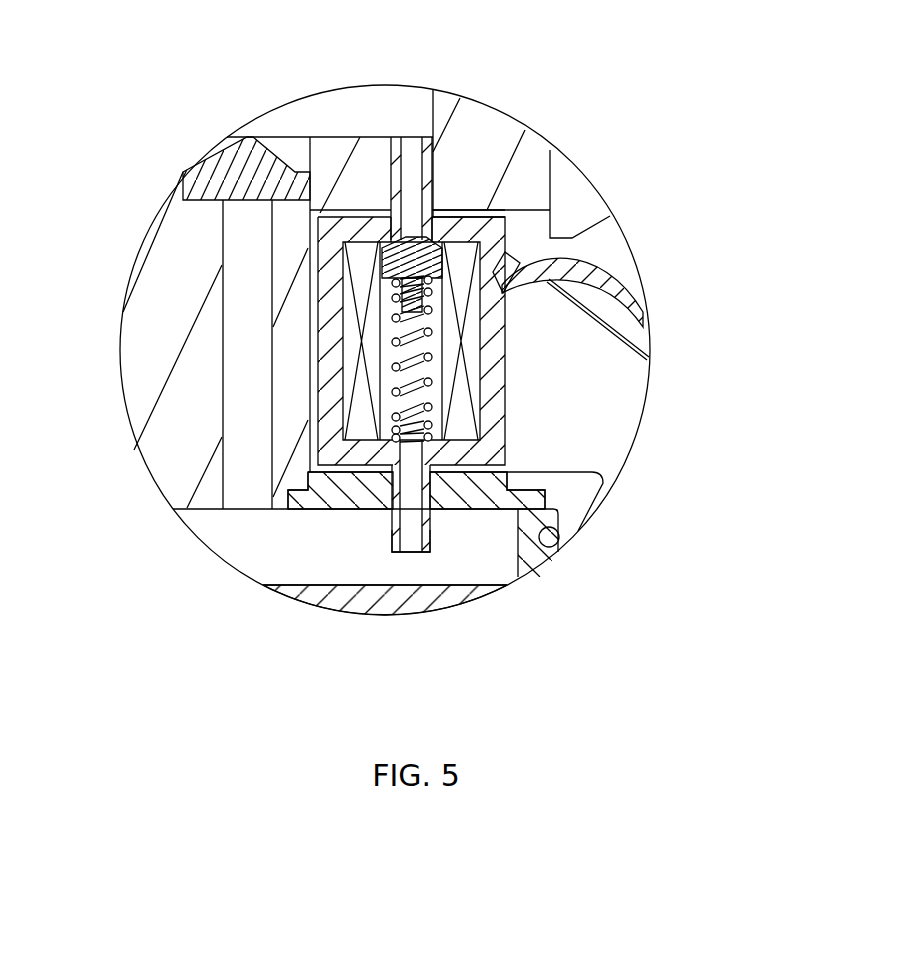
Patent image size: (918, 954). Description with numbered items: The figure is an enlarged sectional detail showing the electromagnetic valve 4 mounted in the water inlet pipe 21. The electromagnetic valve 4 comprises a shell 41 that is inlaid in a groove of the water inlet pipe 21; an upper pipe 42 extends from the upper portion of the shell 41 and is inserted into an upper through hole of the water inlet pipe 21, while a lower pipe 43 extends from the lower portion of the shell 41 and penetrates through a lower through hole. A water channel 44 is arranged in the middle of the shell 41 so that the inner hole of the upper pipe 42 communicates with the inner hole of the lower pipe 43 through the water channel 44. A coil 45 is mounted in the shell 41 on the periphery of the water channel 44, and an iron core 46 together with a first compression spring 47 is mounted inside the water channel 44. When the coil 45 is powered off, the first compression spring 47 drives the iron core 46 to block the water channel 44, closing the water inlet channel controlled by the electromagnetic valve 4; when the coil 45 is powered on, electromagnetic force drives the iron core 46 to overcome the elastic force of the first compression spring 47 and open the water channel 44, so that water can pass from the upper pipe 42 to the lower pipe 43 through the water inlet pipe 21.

The electromagnetic valve 4 is at (513, 343).
The water inlet pipe 21 is at (173, 277).
The shell 41 is at (493, 388).
The upper pipe 42 is at (391, 147).
The lower pipe 43 is at (432, 538).
The water channel 44 is at (385, 355).
The coil 45 is at (462, 404).
The iron core 46 is at (432, 242).
The first compression spring 47 is at (395, 417).